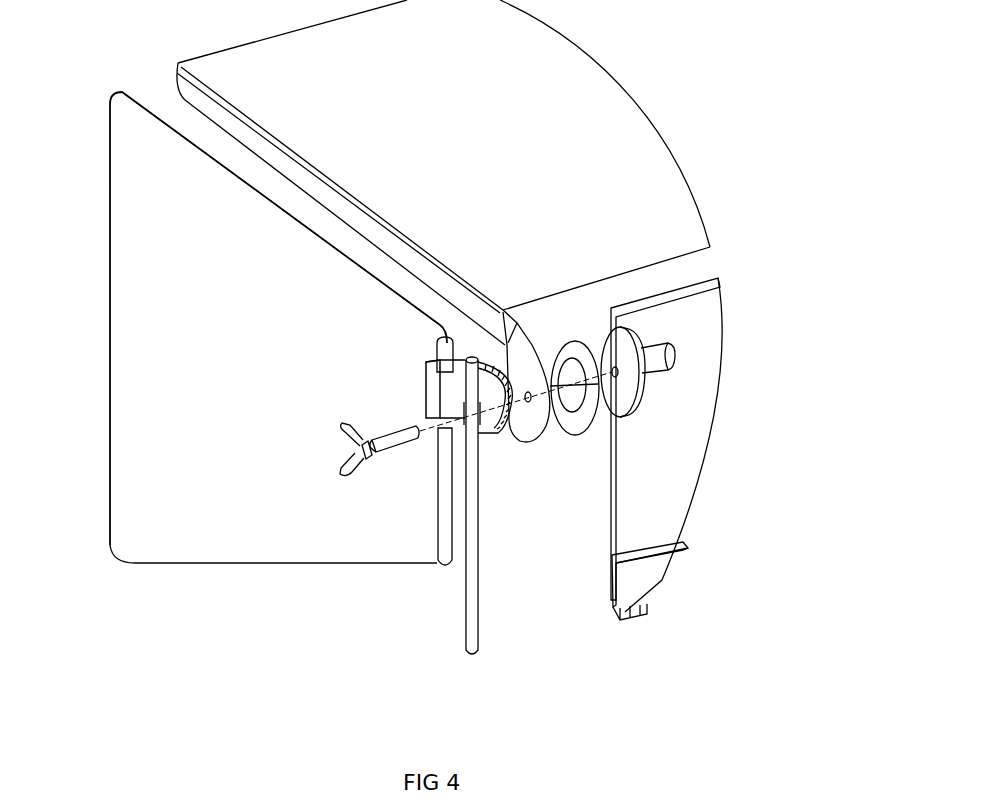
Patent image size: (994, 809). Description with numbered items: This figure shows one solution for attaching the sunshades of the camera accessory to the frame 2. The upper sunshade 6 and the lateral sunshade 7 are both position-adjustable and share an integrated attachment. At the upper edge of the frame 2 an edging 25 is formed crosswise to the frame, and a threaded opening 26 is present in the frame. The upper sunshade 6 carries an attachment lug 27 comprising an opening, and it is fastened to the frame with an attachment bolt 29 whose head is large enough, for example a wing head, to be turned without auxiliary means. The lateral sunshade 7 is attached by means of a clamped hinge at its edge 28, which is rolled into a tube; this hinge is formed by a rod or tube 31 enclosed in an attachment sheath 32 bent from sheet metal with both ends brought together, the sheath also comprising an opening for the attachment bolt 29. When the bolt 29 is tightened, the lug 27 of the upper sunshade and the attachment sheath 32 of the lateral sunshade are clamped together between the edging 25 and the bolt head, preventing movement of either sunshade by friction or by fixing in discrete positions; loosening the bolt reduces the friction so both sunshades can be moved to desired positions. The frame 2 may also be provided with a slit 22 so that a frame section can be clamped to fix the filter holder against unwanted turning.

The frame 2 is at (708, 384).
The upper sunshade 6 is at (304, 68).
The lateral sunshade 7 is at (415, 530).
The slit 22 is at (662, 553).
The edging 25 is at (633, 385).
The threaded opening 26 is at (617, 370).
The attachment lug 27 is at (540, 428).
The edge of the lateral sunshade 28 is at (449, 545).
The attachment bolt 29 is at (404, 435).
The rod or tube 31 is at (582, 420).
The attachment sheath 32 is at (492, 426).